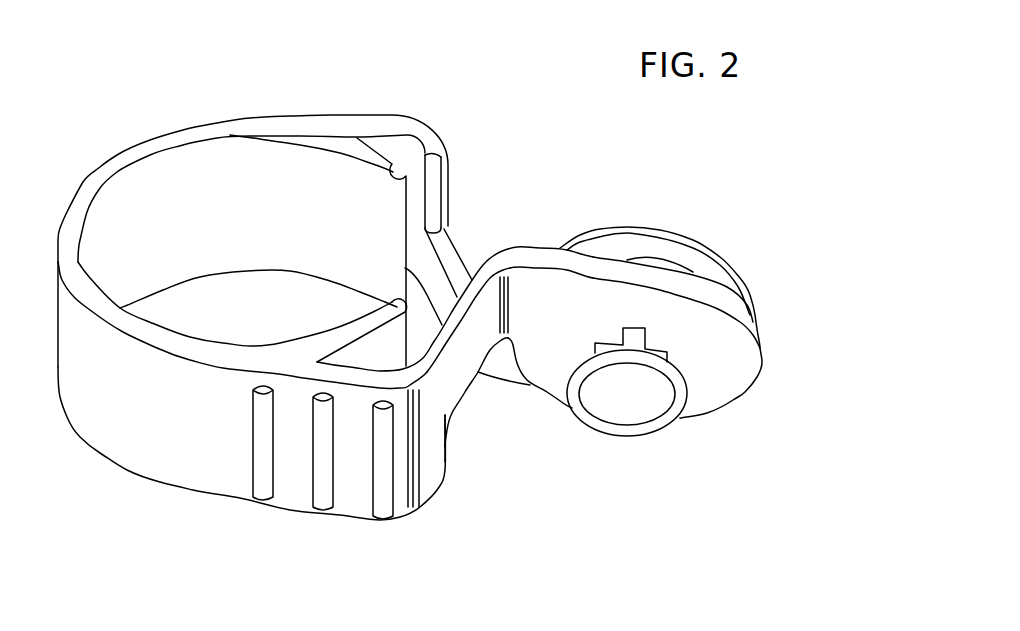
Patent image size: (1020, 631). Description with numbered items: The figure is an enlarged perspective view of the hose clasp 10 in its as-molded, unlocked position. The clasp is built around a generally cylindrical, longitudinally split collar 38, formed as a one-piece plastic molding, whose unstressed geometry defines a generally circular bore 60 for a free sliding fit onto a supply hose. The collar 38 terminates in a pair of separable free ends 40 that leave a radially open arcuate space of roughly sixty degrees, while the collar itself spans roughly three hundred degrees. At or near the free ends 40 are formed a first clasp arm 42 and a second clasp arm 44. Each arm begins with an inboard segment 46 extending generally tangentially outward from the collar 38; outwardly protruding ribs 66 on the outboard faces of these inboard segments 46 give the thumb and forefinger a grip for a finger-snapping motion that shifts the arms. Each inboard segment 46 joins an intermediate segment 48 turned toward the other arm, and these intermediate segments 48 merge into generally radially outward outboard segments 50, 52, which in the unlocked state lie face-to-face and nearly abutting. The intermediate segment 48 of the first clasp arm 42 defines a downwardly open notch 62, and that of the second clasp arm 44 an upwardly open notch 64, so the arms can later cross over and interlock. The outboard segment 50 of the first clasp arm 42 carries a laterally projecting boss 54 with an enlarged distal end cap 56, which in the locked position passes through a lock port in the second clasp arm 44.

The hose clasp 10 is at (390, 82).
The split collar 38 is at (243, 132).
The free ends 40 is at (393, 305).
The first clasp arm 42 is at (413, 508).
The second clasp arm 44 is at (449, 142).
The inboard segment 46 is at (408, 115).
The intermediate segment 48 is at (447, 257).
The outboard segment 50 is at (727, 397).
The outboard segment 52 is at (740, 260).
The boss 54 is at (668, 258).
The distal end cap 56 is at (627, 425).
The bore 60 is at (119, 195).
The notch 62 is at (445, 460).
The notch 64 is at (438, 181).
The ribs 66 is at (307, 508).